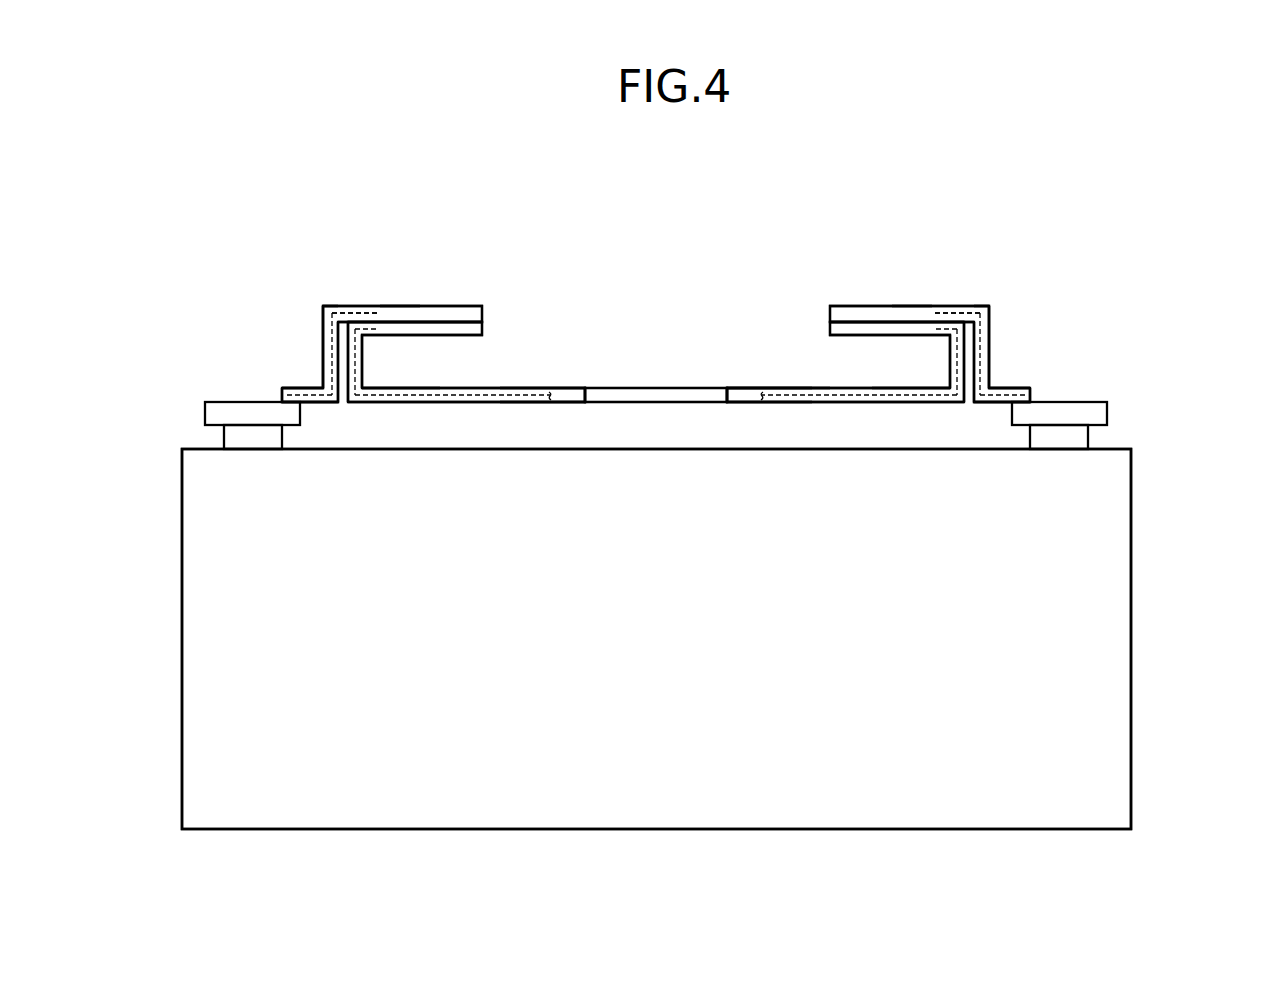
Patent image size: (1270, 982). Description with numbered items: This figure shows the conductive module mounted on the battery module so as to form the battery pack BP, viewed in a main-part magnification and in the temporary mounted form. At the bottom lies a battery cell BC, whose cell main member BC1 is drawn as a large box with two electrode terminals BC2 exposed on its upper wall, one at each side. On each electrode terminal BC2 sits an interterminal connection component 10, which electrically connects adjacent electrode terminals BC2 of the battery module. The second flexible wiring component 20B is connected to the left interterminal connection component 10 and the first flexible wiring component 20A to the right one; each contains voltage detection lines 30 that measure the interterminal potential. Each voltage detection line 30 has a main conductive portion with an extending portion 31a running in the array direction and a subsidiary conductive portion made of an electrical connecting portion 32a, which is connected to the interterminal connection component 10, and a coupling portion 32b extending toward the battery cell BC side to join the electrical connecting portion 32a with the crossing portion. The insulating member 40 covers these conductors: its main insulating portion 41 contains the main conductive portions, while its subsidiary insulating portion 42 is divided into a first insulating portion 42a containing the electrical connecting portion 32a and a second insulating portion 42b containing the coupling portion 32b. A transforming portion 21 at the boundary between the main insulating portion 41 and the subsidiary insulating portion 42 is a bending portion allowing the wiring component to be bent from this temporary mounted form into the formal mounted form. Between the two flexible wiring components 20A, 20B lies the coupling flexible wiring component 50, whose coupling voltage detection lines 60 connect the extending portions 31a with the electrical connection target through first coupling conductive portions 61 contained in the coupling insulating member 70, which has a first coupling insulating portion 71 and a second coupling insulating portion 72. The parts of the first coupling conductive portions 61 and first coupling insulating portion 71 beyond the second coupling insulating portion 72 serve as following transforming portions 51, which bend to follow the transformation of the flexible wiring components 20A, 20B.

The interterminal connection component 10 is at (205, 417).
The first flexible wiring component 20A is at (878, 230).
The second flexible wiring component 20B is at (435, 230).
The transforming portion 21 is at (320, 302).
The voltage detection line 30 is at (352, 304).
The extending portion 31a is at (984, 268).
The electrical connecting portion 32a is at (308, 392).
The coupling portion 32b is at (323, 338).
The insulating member 40 is at (437, 302).
The main insulating portion 41 is at (397, 305).
The subsidiary insulating portion 42 is at (656, 354).
The first insulating portion 42a is at (298, 388).
The second insulating portion 42b is at (323, 357).
The coupling flexible wiring component 50 is at (630, 348).
The following transforming portion 51 is at (373, 373).
The coupling voltage detection line 60 is at (473, 390).
The first coupling conductive portion 61 is at (532, 388).
The coupling insulating member 70 is at (680, 383).
The first coupling insulating portion 71 is at (813, 388).
The second coupling insulating portion 72 is at (740, 388).
The battery pack BP is at (707, 212).
The battery cell BC is at (1162, 517).
The cell main member BC1 is at (1131, 548).
The electrode terminal BC2 is at (224, 437).